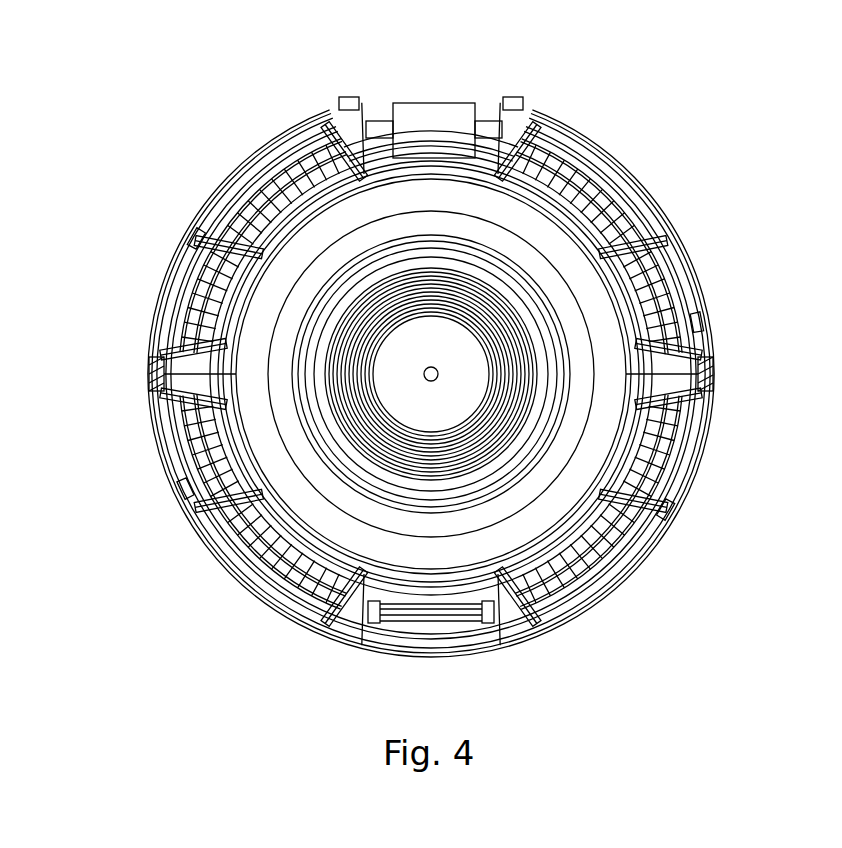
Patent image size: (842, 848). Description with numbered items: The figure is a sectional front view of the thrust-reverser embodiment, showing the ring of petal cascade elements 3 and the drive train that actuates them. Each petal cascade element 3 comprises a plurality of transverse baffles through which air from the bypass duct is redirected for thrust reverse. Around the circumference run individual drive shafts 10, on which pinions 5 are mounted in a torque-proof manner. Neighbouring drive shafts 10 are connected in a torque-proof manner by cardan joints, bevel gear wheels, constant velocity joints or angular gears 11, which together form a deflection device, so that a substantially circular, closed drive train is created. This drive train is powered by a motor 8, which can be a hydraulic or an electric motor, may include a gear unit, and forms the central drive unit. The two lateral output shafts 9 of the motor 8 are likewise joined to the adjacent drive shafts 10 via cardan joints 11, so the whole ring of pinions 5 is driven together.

The petal cascade element 3 is at (248, 168).
The pinion 5 is at (185, 252).
The motor 8 is at (440, 103).
The output shaft 9 is at (380, 120).
The drive shaft 10 is at (705, 335).
The angular gear 11 is at (352, 102).